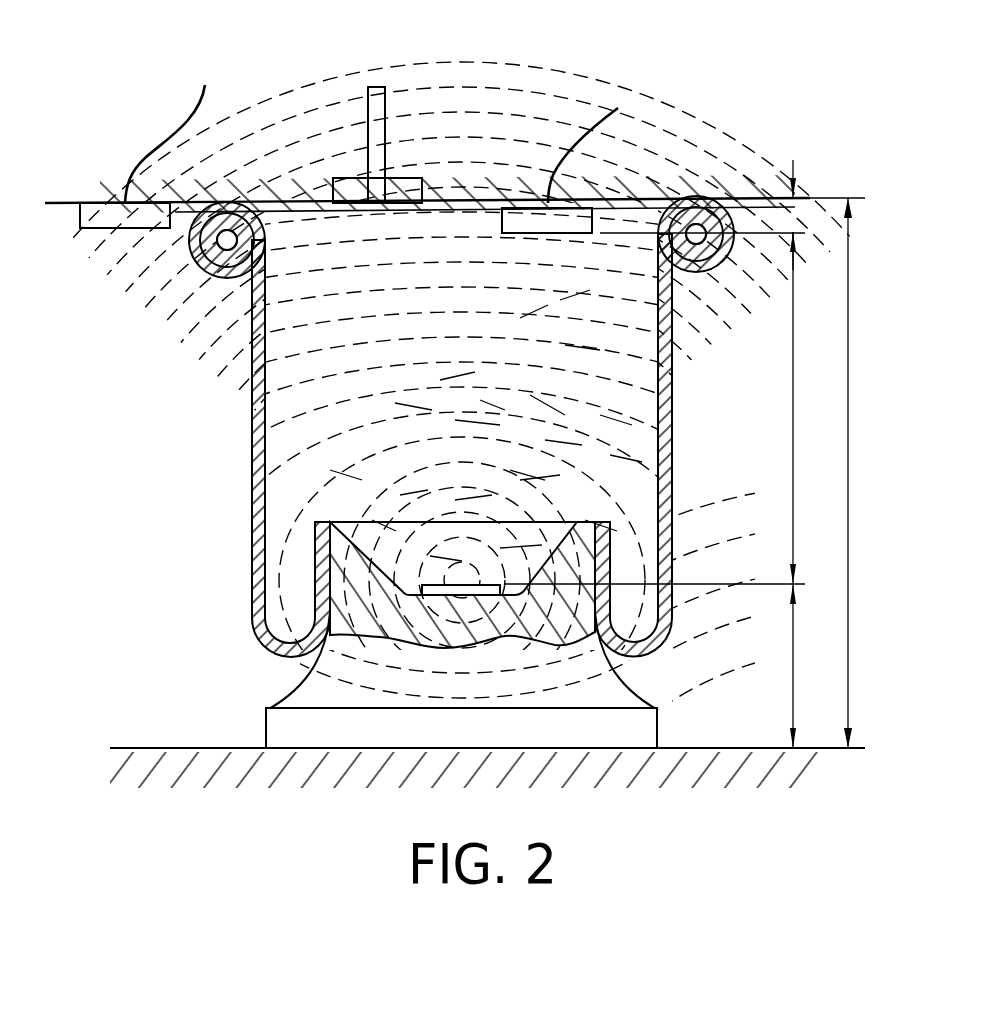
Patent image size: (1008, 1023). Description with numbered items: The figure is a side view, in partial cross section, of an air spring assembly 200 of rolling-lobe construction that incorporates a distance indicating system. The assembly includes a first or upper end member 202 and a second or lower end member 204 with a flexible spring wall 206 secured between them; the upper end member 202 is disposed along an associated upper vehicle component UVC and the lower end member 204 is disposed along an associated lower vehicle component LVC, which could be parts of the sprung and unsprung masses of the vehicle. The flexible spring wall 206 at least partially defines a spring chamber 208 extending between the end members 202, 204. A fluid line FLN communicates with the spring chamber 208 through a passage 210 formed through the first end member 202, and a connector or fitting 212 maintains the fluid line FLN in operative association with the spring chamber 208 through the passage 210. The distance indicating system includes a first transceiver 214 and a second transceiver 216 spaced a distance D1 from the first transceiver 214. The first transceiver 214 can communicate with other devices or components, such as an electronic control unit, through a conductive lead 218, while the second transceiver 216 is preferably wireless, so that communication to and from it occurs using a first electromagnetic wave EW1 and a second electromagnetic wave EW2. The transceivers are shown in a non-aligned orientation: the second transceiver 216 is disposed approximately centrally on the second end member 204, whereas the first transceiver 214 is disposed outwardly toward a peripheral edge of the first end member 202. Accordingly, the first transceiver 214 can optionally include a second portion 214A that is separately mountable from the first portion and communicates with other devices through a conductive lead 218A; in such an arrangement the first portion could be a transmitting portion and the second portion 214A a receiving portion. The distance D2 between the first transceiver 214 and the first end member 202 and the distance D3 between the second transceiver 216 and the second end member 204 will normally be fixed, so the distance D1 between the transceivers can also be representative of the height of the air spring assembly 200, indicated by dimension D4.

The air spring assembly 200 is at (167, 386).
The first or upper end member 202 is at (475, 180).
The second or lower end member 204 is at (287, 700).
The flexible spring wall 206 is at (236, 526).
The spring chamber 208 is at (283, 458).
The passage 210 is at (388, 198).
The connector or fitting 212 is at (352, 187).
The first transceiver 214 is at (598, 199).
The second portion 214A is at (106, 190).
The second transceiver 216 is at (405, 570).
The conductive lead 218 is at (618, 106).
The conductive lead 218A is at (195, 108).
The fluid line FLN is at (368, 90).
The upper vehicle component UVC is at (62, 206).
The lower vehicle component LVC is at (173, 748).
The first electromagnetic wave EW1 is at (695, 668).
The second electromagnetic wave EW2 is at (307, 435).
The distance between transceivers D1 is at (658, 408).
The distance between first transceiver and first end member D2 is at (722, 200).
The distance between second transceiver and second end member D3 is at (793, 666).
The height of air spring assembly D4 is at (847, 473).